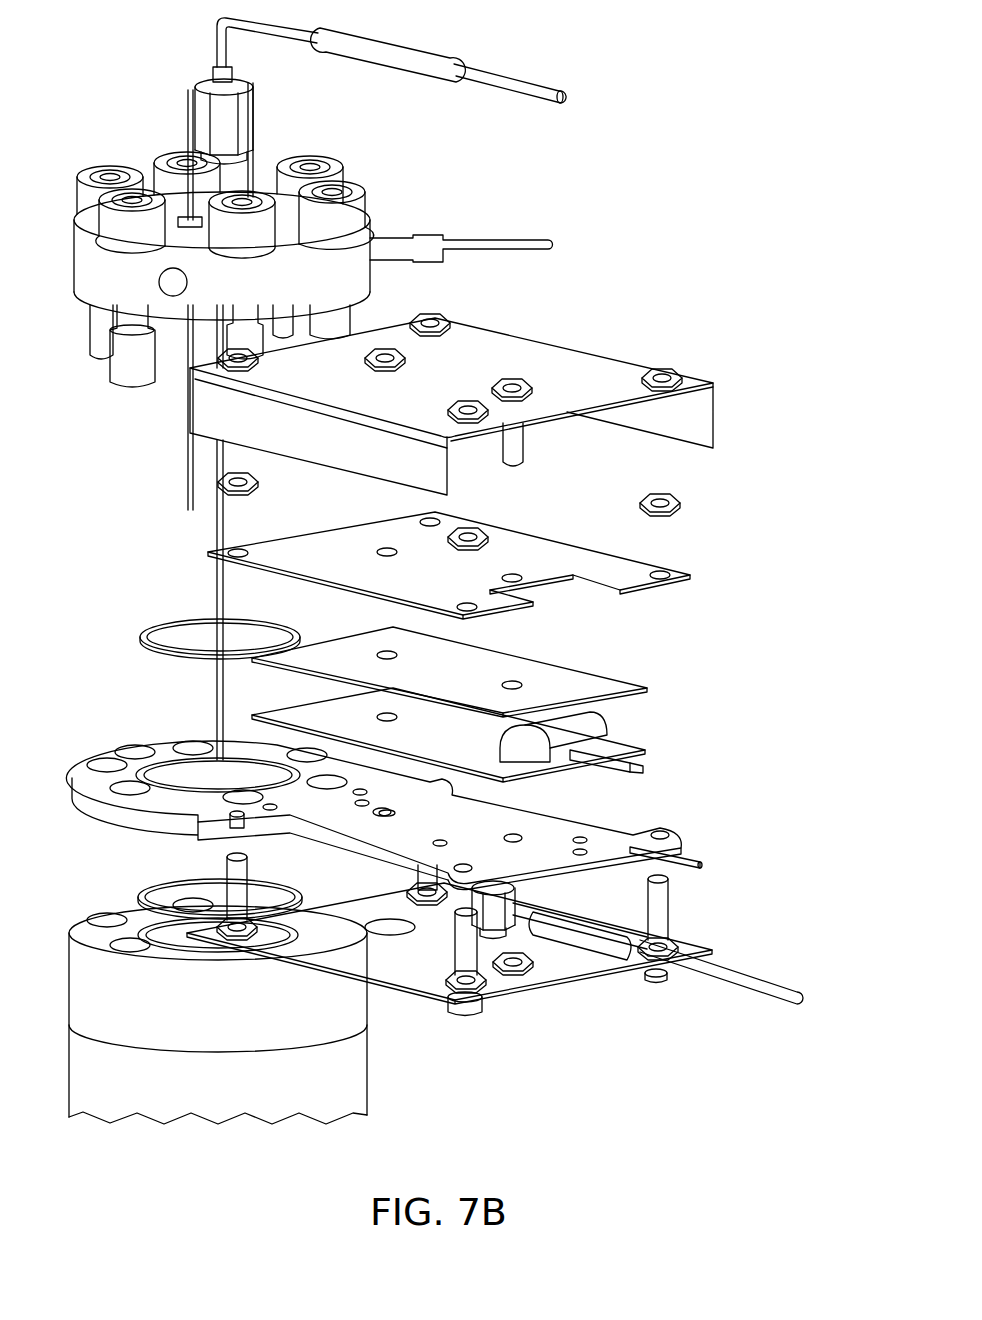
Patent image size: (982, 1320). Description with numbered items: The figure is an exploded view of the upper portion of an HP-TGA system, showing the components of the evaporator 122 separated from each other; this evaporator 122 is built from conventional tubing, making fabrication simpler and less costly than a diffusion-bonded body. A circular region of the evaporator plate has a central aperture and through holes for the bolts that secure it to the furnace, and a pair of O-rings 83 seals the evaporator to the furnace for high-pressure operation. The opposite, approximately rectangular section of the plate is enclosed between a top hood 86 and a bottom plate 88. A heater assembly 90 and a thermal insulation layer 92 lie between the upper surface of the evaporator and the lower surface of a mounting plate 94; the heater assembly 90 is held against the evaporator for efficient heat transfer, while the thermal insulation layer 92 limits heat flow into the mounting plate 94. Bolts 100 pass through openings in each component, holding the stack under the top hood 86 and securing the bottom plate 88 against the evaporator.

The top hood 86 is at (563, 357).
The mounting plate 94 is at (558, 555).
The O-rings 83 is at (142, 637).
The thermal insulation layer 92 is at (583, 680).
The heater assembly 90 is at (623, 745).
The evaporator 122 is at (636, 820).
The bottom plate 88 is at (393, 993).
The bolts 100 is at (472, 1017).